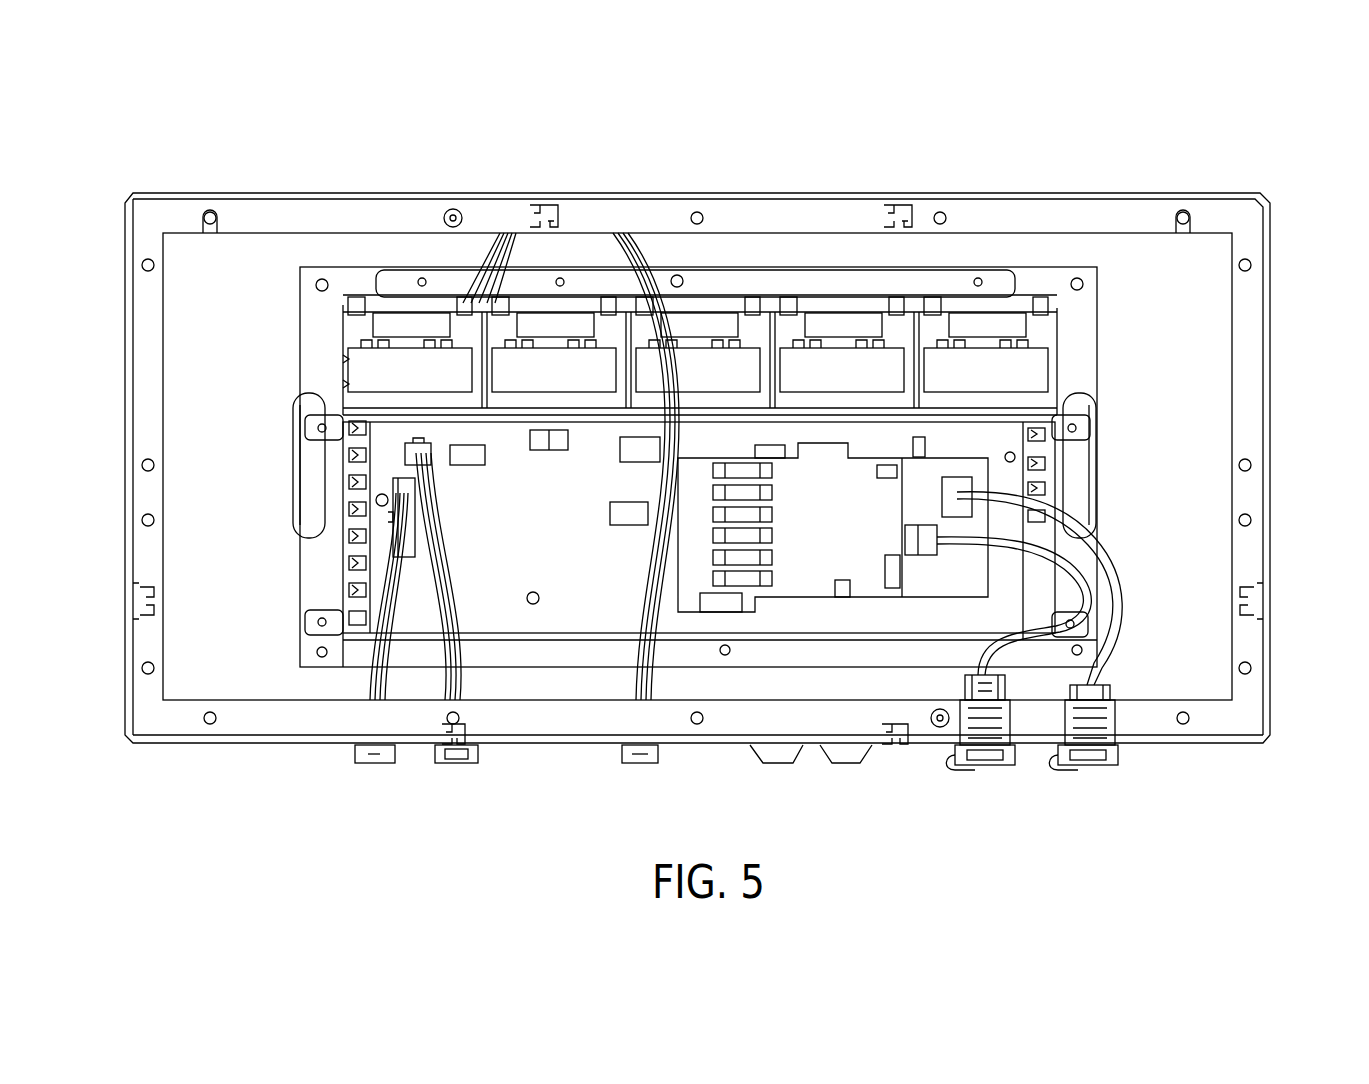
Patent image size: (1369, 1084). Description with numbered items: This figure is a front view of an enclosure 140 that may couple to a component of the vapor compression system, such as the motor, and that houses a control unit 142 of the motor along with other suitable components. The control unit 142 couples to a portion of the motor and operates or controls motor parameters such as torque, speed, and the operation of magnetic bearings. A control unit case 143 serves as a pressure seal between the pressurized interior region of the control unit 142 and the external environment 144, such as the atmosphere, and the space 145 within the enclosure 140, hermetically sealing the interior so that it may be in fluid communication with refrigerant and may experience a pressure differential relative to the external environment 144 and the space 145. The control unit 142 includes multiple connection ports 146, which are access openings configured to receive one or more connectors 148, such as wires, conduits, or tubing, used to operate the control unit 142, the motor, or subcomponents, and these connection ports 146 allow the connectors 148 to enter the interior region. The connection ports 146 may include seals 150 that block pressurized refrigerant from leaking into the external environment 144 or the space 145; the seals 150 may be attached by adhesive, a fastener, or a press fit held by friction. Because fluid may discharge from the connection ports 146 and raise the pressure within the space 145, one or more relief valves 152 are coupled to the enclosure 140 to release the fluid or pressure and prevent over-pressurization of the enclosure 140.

The enclosure 140 is at (701, 457).
The control unit 142 is at (747, 268).
The control unit case 143 is at (316, 346).
The external environment 144 is at (1346, 377).
The space 145 is at (220, 457).
The connection ports 146 is at (322, 569).
The connectors 148 is at (1100, 606).
The seals 150 is at (360, 562).
The relief valves 152 is at (845, 765).